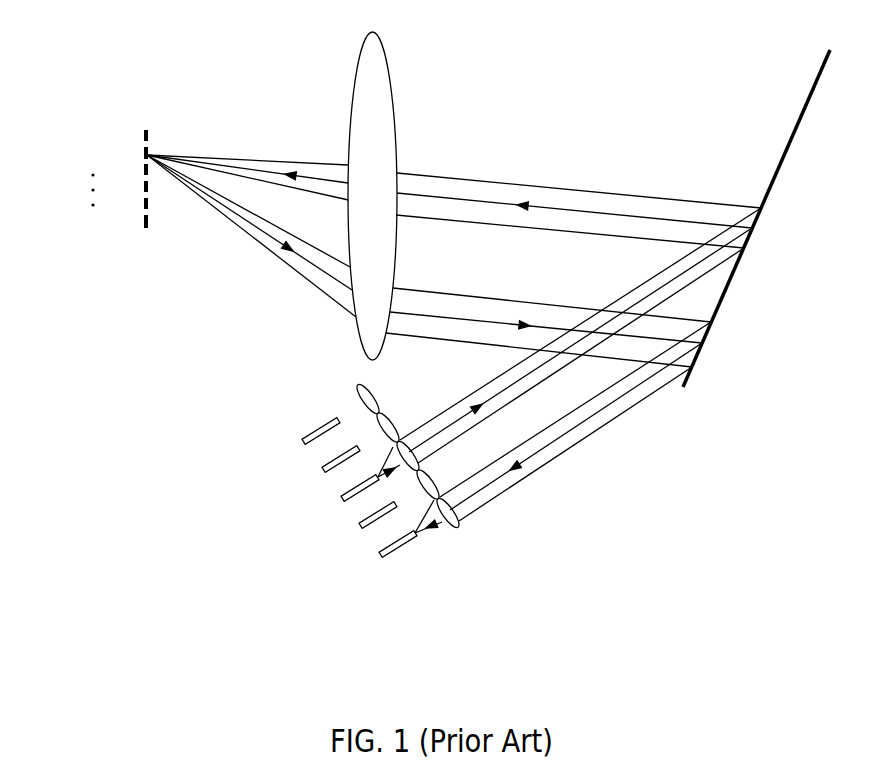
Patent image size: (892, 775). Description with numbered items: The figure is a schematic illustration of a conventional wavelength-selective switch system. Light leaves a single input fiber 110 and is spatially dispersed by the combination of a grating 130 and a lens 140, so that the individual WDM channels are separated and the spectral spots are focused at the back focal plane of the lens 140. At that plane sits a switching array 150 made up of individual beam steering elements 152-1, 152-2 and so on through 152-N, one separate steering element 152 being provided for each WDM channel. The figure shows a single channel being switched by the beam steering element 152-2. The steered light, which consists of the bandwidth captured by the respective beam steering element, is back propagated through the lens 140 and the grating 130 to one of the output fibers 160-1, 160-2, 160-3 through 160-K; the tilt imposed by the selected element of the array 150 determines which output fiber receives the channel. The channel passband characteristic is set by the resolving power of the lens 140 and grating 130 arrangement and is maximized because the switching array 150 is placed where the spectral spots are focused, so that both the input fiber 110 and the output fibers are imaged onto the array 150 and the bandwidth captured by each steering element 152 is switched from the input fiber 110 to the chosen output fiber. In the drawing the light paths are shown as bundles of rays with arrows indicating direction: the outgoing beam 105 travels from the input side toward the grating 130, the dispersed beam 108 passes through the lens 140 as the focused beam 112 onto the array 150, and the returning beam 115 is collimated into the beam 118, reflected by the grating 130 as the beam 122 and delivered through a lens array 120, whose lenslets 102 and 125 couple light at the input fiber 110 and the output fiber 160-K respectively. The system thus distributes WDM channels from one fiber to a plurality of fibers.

The lens 140 is at (372, 183).
The grating 130 is at (771, 203).
The switching array 150 is at (145, 163).
The beam steering element 152-1 is at (144, 134).
The beam steering element 152-2 is at (144, 154).
The beam steering element 152-N is at (144, 217).
The steering element 152 is at (44, 216).
The reflected beam 108 is at (578, 202).
The focused beam 112 is at (248, 167).
The diverging beam 115 is at (251, 236).
The collimated beam 118 is at (548, 320).
The collimated beam from lenslet 105 is at (580, 335).
The reflected beam to lenslet 122 is at (575, 421).
The lenslet array 120 is at (422, 468).
The lenslet 102 is at (392, 458).
The lenslet 125 is at (431, 514).
The input fiber 110 is at (343, 497).
The output fiber 160-1 is at (294, 441).
The output fiber 160-2 is at (314, 469).
The output fiber 160-3 is at (352, 525).
The output fiber 160-K is at (372, 553).